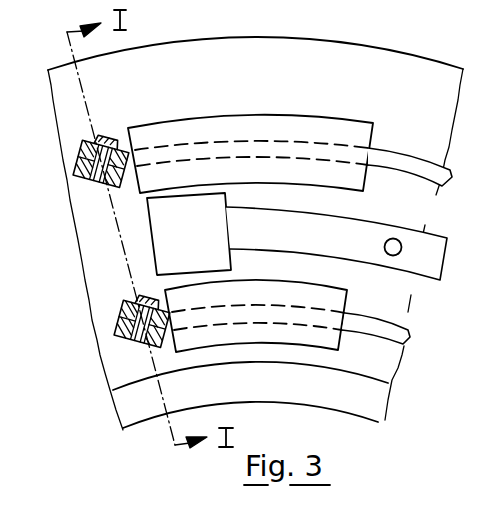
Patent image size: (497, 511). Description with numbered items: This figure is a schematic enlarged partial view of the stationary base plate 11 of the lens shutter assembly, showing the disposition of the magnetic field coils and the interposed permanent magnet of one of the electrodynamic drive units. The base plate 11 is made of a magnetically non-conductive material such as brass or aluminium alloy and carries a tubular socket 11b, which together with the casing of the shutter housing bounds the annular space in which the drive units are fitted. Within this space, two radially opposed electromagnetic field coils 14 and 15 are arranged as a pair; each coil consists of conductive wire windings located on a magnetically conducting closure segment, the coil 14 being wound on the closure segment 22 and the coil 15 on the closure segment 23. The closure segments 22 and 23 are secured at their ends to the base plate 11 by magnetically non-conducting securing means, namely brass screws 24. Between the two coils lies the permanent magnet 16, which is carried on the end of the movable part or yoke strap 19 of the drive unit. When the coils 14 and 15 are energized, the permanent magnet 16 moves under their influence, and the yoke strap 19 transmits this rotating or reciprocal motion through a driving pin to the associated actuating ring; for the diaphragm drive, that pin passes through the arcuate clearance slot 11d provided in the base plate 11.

The base plate 11 is at (307, 67).
The tubular socket 11b is at (140, 402).
The arcuate clearance slot 11d is at (80, 157).
The electromagnetic field coil 14 is at (248, 113).
The electromagnetic field coil 15 is at (342, 337).
The permanent magnet 16 is at (210, 248).
The yoke strap 19 is at (313, 233).
The closure segment 22 is at (438, 178).
The closure segment 23 is at (400, 335).
The brass screw 24 is at (80, 142).